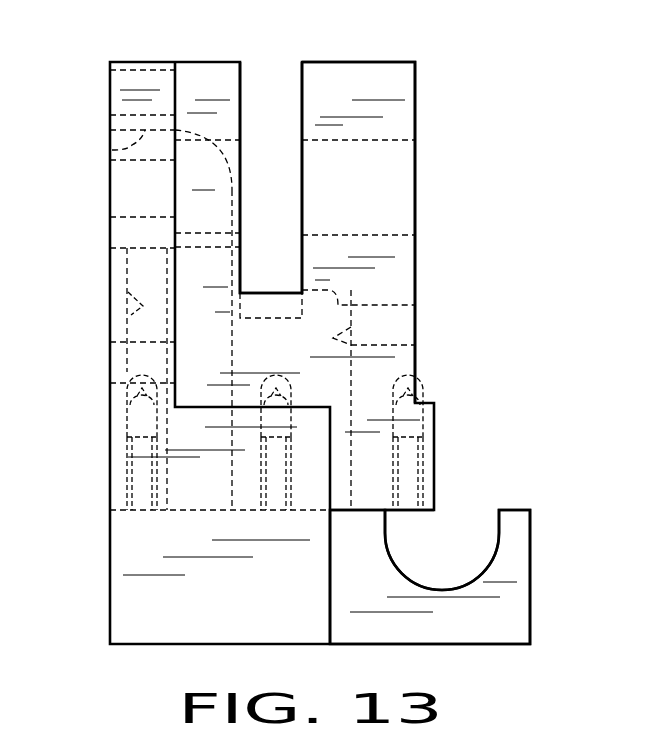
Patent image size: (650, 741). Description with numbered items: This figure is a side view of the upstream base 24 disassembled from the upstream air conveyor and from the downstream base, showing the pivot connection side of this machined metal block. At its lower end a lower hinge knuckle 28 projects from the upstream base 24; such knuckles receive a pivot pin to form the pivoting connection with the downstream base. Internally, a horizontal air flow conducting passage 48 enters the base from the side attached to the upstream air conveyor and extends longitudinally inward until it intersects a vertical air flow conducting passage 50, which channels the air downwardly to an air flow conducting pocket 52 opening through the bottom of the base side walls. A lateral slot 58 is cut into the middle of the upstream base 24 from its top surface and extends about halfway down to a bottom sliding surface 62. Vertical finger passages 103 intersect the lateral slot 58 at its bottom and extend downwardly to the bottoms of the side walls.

The upstream base 24 is at (378, 82).
The lower hinge knuckle 28 is at (507, 602).
The horizontal air flow conducting passage 48 is at (112, 150).
The vertical air flow conducting passage 50 is at (128, 315).
The air flow conducting pocket 52 is at (367, 467).
The lateral slot 58 is at (272, 68).
The bottom sliding surface 62 is at (278, 318).
The vertical finger passage 103 is at (415, 305).